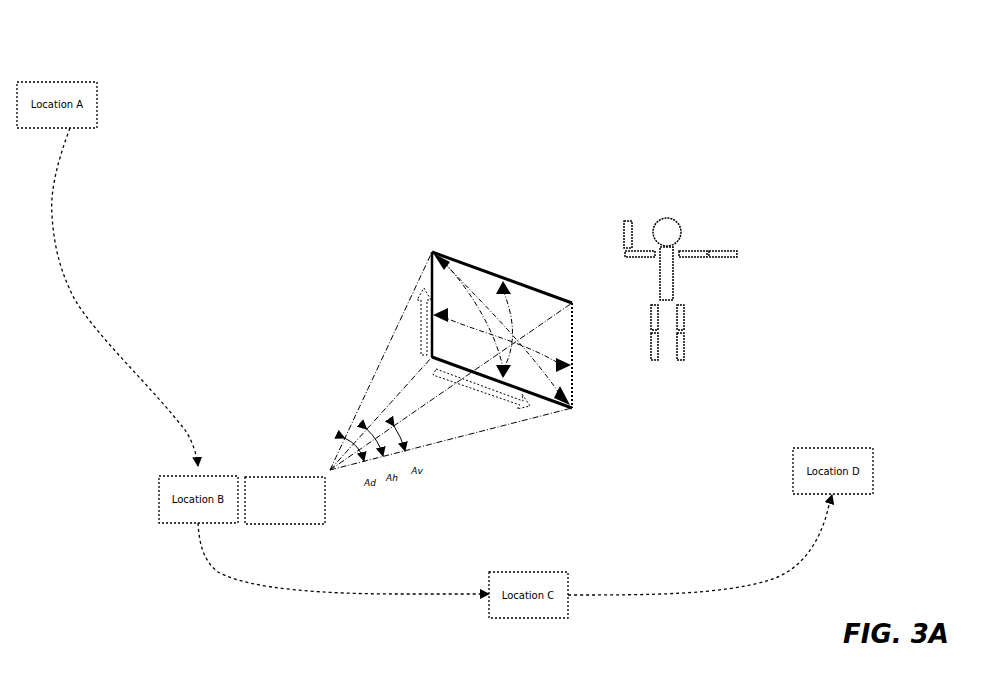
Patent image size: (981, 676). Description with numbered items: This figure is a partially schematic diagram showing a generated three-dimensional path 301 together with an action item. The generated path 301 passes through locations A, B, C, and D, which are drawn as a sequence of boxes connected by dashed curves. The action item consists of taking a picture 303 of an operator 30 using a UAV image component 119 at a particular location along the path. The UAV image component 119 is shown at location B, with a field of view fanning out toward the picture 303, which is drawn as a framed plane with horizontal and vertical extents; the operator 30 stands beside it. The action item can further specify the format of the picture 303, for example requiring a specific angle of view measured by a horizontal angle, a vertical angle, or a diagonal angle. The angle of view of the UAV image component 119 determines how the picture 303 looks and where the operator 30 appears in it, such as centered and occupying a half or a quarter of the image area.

The generated 3D path 301 is at (118, 316).
The picture 303 is at (459, 254).
The UAV image component 119 is at (285, 500).
The operator 30 is at (680, 311).